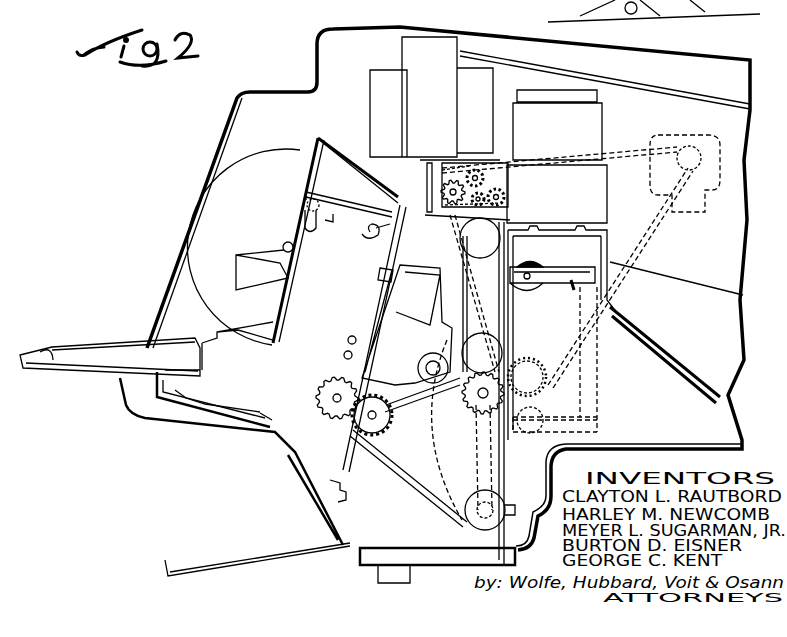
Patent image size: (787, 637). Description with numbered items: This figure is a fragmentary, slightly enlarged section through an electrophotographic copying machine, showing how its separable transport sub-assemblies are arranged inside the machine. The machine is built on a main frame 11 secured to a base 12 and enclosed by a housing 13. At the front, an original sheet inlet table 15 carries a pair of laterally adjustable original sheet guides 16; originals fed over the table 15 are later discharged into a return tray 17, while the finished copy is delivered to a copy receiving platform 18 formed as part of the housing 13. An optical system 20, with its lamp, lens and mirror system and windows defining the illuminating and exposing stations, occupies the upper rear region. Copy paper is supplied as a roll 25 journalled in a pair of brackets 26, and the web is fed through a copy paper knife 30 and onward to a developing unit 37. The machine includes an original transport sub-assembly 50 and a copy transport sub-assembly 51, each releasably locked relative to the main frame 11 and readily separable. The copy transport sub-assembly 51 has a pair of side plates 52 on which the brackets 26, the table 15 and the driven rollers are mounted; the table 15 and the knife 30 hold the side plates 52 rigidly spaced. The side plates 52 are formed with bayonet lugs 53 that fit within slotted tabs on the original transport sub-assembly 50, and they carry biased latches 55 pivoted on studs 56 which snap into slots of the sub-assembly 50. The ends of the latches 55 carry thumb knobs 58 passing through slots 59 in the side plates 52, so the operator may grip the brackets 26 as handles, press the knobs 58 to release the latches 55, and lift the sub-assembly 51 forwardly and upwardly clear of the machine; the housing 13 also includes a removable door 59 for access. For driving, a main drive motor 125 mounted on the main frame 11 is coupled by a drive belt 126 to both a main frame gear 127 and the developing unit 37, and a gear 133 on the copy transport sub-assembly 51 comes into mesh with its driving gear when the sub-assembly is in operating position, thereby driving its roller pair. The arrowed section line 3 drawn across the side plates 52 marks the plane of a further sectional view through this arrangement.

The section line 3-3 / carriage rail 3 is at (393, 200).
The main frame 11 is at (735, 448).
The base 12 is at (372, 572).
The housing 13 is at (430, 30).
The original sheet inlet table 15 is at (44, 346).
The original sheet guides 16 is at (82, 344).
The return tray 17 is at (250, 560).
The copy receiving platform 18 is at (678, 92).
The optical system 20 is at (702, 292).
The roll 25 is at (266, 162).
The brackets 26 is at (254, 252).
The copy paper knife 30 is at (380, 272).
The developing unit 37 is at (508, 185).
The original transport sub-assembly 50 is at (432, 536).
The copy transport sub-assembly 51 is at (244, 408).
The side plates 52 is at (215, 405).
The bayonet lugs 53 is at (348, 505).
The latches 55 is at (352, 214).
The studs 56 is at (364, 232).
The thumb knobs 58 is at (316, 202).
The slots 59 is at (200, 208).
The main drive motor 125 is at (702, 134).
The drive belt 126 is at (660, 237).
The main frame gear 127 is at (535, 362).
The gear 133 is at (318, 398).